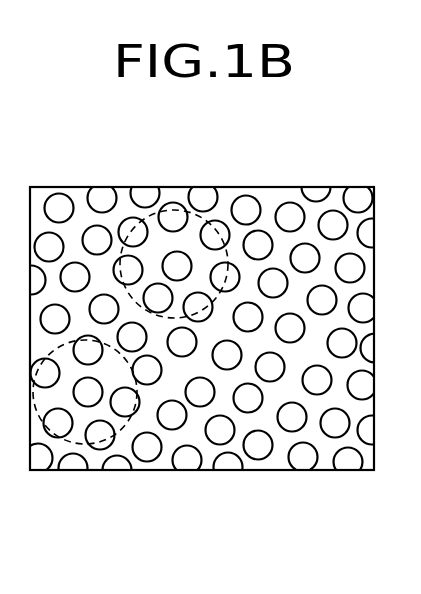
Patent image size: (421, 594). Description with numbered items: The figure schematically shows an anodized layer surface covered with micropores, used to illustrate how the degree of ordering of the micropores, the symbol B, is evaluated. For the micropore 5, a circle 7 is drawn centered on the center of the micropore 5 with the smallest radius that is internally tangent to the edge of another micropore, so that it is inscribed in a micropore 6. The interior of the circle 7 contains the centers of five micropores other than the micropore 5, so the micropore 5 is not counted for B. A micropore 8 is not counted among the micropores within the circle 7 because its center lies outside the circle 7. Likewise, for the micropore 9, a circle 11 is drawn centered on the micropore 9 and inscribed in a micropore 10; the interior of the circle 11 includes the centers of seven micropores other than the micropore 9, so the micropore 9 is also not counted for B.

The micropore 5 is at (80, 406).
The micropore 6 is at (134, 352).
The circle 7 is at (54, 440).
The micropore 8 is at (162, 372).
The micropore 9 is at (177, 251).
The micropore 10 is at (158, 283).
The circle 11 is at (207, 221).